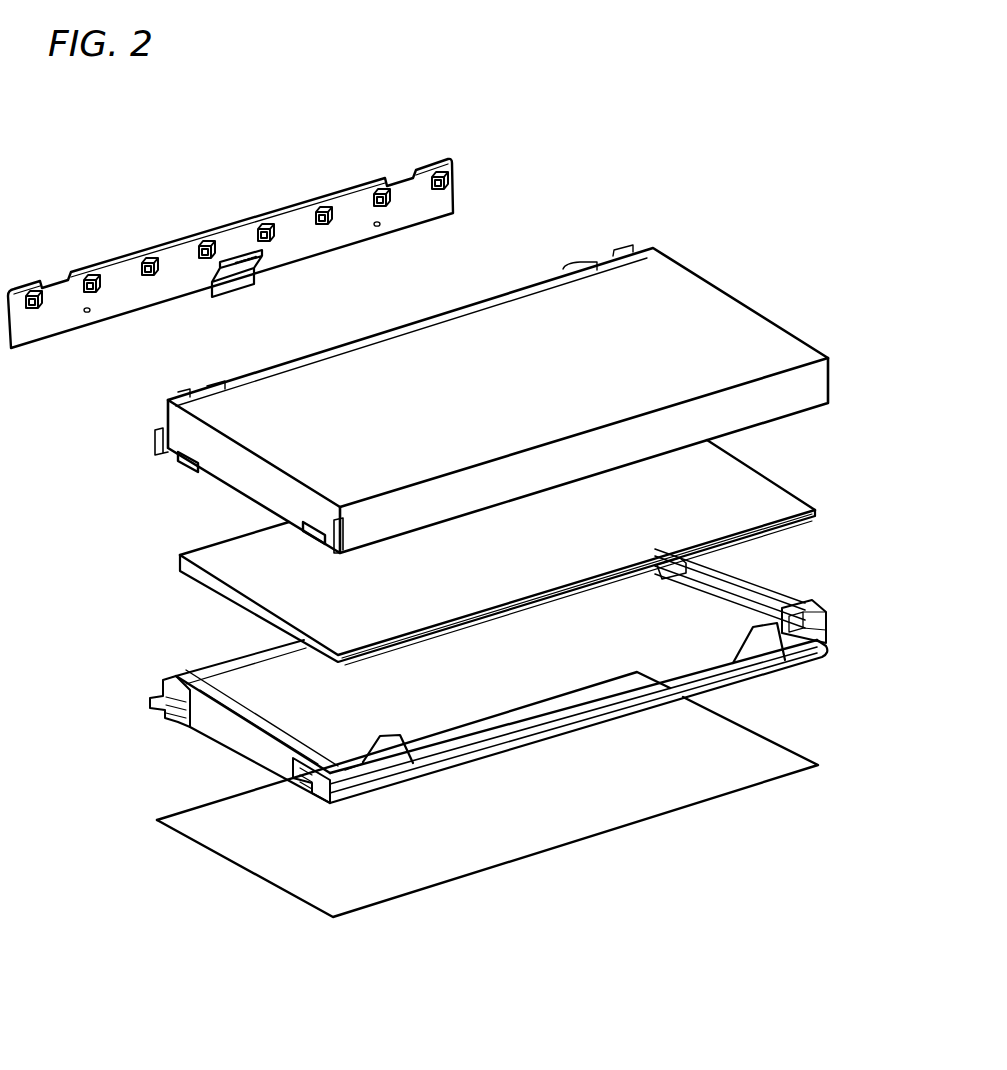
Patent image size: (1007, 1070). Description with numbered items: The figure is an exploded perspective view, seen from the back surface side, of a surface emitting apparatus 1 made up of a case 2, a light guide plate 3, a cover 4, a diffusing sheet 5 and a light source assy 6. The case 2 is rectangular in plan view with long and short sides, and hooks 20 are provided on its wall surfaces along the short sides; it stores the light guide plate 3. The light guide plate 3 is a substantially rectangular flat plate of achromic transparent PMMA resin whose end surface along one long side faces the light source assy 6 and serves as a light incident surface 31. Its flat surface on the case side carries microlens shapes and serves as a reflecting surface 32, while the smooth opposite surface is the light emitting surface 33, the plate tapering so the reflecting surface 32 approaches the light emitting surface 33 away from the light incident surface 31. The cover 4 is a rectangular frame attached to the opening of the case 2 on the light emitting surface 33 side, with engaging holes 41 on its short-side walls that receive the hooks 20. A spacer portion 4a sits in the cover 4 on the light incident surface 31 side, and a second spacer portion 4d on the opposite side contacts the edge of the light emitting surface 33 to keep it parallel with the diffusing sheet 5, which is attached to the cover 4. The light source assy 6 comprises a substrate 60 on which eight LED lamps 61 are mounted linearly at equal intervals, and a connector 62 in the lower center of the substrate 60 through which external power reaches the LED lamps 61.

The surface emitting apparatus 1 is at (742, 44).
The case 2 is at (790, 328).
The light guide plate 3 is at (758, 464).
The light incident surface 31 is at (178, 556).
The reflecting surface 32 is at (773, 504).
The light emitting surface 33 is at (785, 522).
The cover 4 is at (830, 649).
The spacer portion 4a is at (210, 668).
The second spacer portion 4d is at (772, 645).
The engaging holes 41 is at (688, 563).
The diffusing sheet 5 is at (805, 752).
The light source assy 6 is at (453, 164).
The substrate 60 is at (453, 200).
The LED lamps 61 is at (33, 293).
The connector 62 is at (242, 290).
The hooks 20 is at (262, 530).